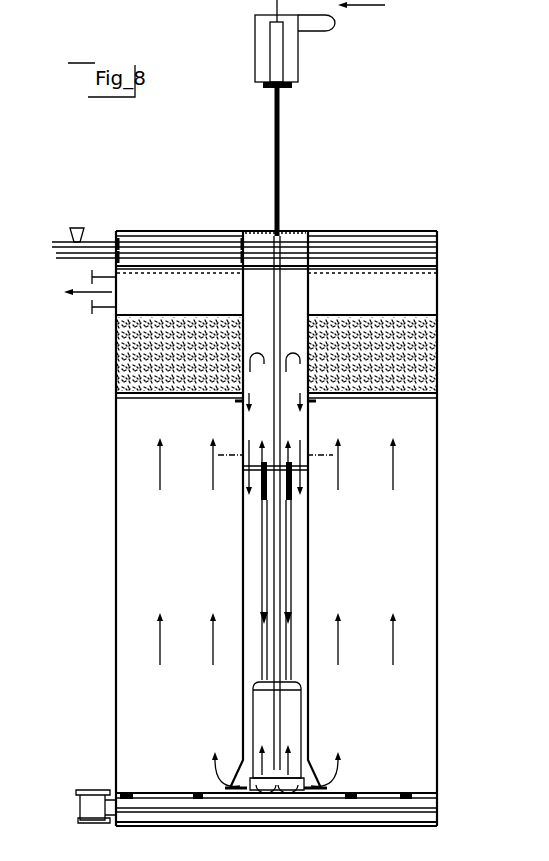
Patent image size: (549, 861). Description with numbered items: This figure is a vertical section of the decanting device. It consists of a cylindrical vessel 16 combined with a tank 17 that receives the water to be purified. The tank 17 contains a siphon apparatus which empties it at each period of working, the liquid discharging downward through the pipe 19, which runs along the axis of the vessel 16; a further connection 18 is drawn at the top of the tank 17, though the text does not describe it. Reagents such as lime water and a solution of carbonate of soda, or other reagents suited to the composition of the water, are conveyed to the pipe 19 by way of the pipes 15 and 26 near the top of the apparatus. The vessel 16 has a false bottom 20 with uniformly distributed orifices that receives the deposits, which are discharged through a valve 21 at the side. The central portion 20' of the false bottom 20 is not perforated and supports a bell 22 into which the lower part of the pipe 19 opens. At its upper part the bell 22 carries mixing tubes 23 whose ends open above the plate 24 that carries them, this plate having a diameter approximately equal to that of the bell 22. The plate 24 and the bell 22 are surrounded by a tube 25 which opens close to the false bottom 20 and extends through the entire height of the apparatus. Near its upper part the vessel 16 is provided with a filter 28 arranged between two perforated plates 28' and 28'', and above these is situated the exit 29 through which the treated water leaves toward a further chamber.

The pipe 15 is at (62, 259).
The cylindrical vessel 16 is at (437, 560).
The tank 17 is at (298, 68).
The outlet pipe 18 is at (335, 18).
The pipe 19 is at (281, 162).
The false bottom 20 is at (276, 780).
The central portion of the false bottom 20' is at (276, 822).
The valve 21 is at (78, 805).
The bell 22 is at (300, 708).
The mixing tubes 23 is at (290, 550).
The plate 24 is at (290, 472).
The tube 25 is at (243, 592).
The pipe 26 is at (58, 242).
The filter 28 is at (298, 354).
The perforated plate 28' is at (300, 294).
The perforated plate 28'' is at (302, 409).
The exit 29 is at (100, 300).